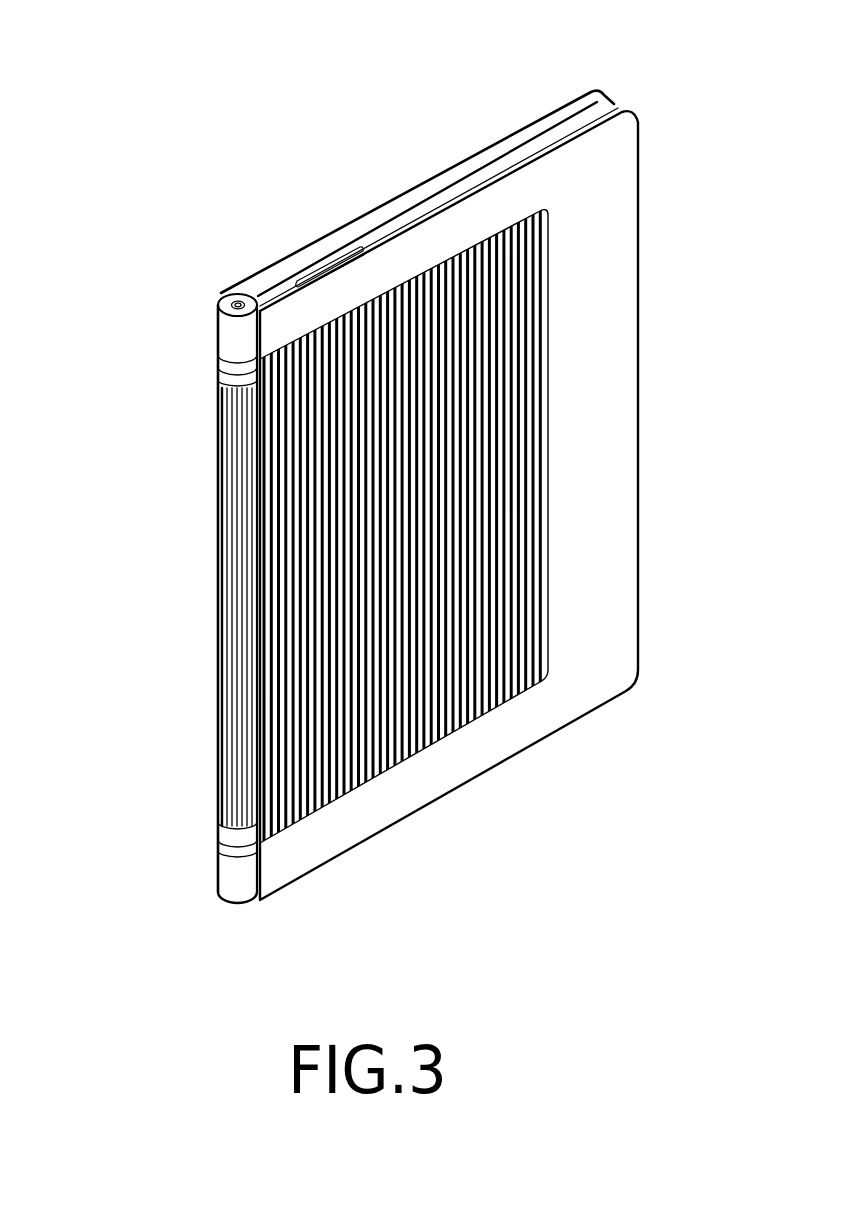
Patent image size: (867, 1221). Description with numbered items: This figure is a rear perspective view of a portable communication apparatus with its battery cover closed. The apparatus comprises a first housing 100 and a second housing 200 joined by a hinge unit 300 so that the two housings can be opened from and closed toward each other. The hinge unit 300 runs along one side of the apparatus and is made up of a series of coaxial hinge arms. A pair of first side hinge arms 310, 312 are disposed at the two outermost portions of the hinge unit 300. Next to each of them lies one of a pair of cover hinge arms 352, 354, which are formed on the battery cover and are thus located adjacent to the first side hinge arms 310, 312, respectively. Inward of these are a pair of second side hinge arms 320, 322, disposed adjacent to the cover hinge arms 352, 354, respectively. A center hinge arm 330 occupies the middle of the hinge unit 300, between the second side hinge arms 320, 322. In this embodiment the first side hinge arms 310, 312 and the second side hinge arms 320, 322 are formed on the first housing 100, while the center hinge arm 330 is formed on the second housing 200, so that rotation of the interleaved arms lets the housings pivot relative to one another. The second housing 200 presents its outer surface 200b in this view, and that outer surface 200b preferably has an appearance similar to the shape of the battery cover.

The first housing 100 is at (582, 89).
The second housing 200 is at (642, 115).
The outer surface 200b is at (593, 688).
The hinge unit 300 is at (214, 634).
The first side hinge arm 310 is at (222, 332).
The first side hinge arm 312 is at (225, 877).
The second side hinge arm 320 is at (222, 382).
The second side hinge arm 322 is at (222, 832).
The center hinge arm 330 is at (220, 502).
The cover hinge arm 352 is at (222, 362).
The cover hinge arm 354 is at (222, 848).